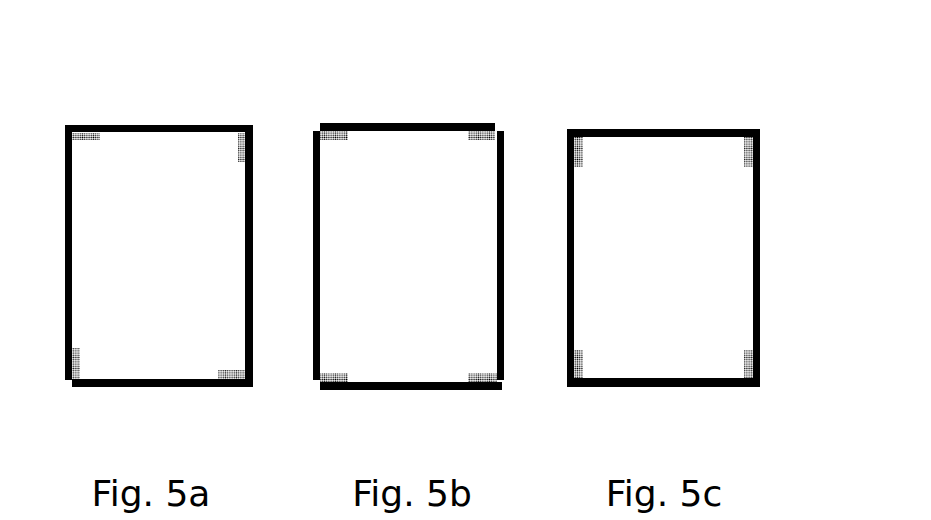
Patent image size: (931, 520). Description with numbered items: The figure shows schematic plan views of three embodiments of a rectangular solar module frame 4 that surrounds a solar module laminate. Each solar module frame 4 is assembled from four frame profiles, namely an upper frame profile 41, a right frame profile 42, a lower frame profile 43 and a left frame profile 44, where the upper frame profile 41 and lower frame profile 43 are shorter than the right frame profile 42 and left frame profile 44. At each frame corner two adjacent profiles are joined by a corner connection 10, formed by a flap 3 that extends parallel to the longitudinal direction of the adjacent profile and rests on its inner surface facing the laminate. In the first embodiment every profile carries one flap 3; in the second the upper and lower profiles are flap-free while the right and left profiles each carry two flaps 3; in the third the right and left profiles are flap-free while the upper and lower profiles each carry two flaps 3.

In FIG. 5A, the flap 3 is at (75, 131).
In FIG. 5B, the flap 3 is at (332, 124).
In FIG. 5C, the flap 3 is at (590, 128).
In FIG. 5A, the solar module frame 4 is at (162, 233).
In FIG. 5B, the solar module frame 4 is at (409, 253).
In FIG. 5C, the solar module frame 4 is at (659, 247).
In FIG. 5A, the corner connection 10 is at (63, 121).
In FIG. 5B, the corner connection 10 is at (292, 95).
In FIG. 5C, the corner connection 10 is at (759, 121).
In FIG. 5A, the upper frame profile 41 is at (172, 124).
In FIG. 5B, the upper frame profile 41 is at (396, 123).
In FIG. 5C, the upper frame profile 41 is at (700, 128).
In FIG. 5A, the right frame profile 42 is at (253, 320).
In FIG. 5B, the right frame profile 42 is at (504, 332).
In FIG. 5C, the right frame profile 42 is at (760, 205).
In FIG. 5A, the lower frame profile 43 is at (155, 388).
In FIG. 5B, the lower frame profile 43 is at (410, 390).
In FIG. 5C, the lower frame profile 43 is at (668, 388).
In FIG. 5A, the left frame profile 44 is at (65, 185).
In FIG. 5B, the left frame profile 44 is at (313, 185).
In FIG. 5C, the left frame profile 44 is at (567, 173).